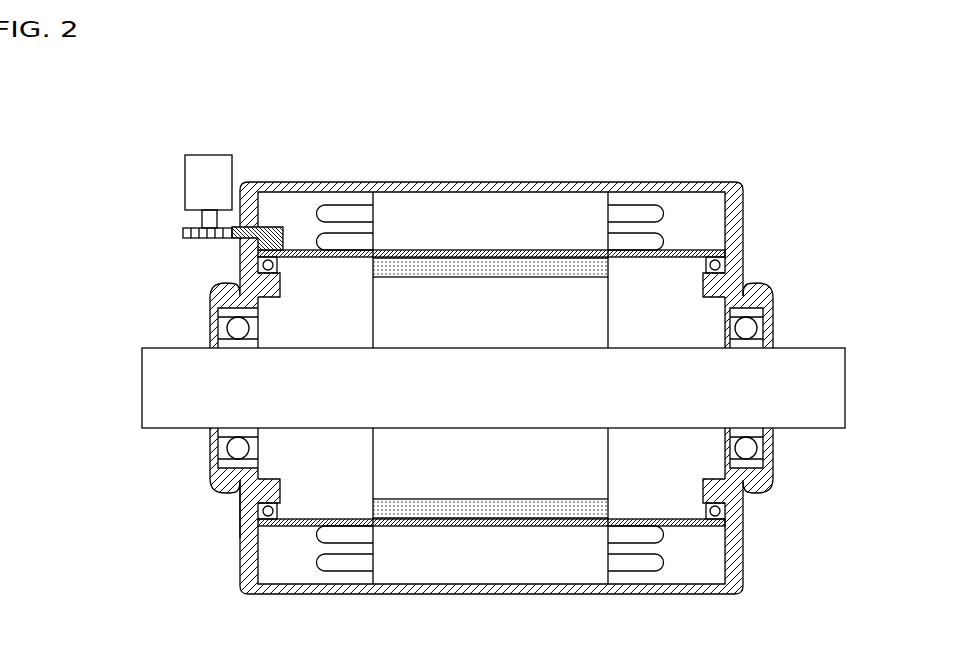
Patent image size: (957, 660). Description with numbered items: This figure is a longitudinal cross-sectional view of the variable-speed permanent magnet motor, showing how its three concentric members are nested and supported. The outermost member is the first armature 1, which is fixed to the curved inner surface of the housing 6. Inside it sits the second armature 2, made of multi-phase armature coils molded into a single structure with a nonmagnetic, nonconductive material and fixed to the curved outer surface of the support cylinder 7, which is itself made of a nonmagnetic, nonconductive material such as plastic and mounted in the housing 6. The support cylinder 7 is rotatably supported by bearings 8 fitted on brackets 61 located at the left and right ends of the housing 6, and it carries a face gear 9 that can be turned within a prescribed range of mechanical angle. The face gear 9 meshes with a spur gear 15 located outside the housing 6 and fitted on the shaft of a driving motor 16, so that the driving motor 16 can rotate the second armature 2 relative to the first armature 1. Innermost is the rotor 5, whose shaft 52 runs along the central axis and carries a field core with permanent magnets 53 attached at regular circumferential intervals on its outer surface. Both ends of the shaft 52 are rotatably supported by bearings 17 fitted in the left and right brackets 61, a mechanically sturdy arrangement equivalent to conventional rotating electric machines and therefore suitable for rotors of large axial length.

The first armature 1 is at (410, 203).
The second armature 2 is at (470, 242).
The rotor 5 is at (537, 292).
The housing 6 is at (645, 182).
The support cylinder 7 is at (678, 250).
The bearings 8 is at (257, 247).
The face gear 9 is at (278, 227).
The spur gear 15 is at (183, 237).
The driving motor 16 is at (190, 165).
The bearings 17 is at (232, 465).
The shaft 52 is at (788, 418).
The permanent magnets 53 is at (520, 258).
The brackets 61 is at (218, 302).